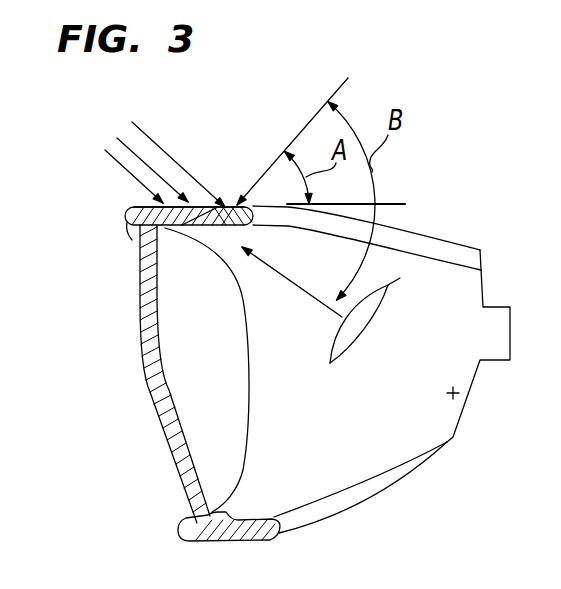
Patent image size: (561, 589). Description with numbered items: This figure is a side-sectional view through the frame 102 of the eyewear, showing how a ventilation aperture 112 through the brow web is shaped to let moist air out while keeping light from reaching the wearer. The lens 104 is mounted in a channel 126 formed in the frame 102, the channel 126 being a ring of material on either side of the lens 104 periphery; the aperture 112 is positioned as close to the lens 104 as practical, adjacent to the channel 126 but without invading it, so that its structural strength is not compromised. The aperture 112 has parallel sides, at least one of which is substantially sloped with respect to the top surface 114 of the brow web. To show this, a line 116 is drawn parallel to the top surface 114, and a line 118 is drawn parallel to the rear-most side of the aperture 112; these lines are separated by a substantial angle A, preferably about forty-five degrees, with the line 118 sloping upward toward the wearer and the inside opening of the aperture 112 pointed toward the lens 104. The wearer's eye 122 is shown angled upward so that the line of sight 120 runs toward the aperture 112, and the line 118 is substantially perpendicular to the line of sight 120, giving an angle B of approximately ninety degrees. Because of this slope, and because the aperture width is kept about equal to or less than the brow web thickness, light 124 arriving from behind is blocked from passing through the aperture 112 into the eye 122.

The frame 102 is at (361, 500).
The lens 104 is at (144, 372).
The aperture 112 is at (213, 229).
The top surface 114 is at (138, 207).
The line 116 is at (405, 204).
The line 118 is at (345, 86).
The line of sight 120 is at (290, 283).
The wearer's eye 122 is at (330, 363).
The light 124 is at (163, 149).
The channel 126 is at (127, 224).